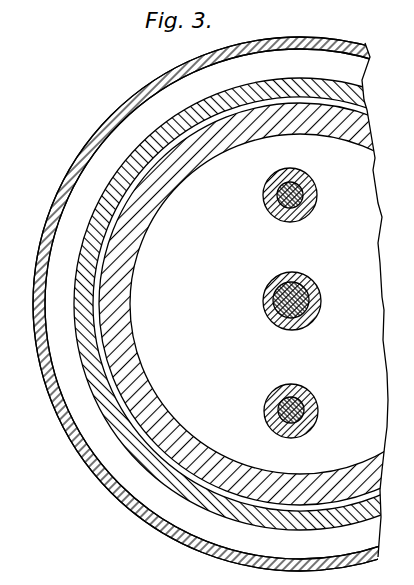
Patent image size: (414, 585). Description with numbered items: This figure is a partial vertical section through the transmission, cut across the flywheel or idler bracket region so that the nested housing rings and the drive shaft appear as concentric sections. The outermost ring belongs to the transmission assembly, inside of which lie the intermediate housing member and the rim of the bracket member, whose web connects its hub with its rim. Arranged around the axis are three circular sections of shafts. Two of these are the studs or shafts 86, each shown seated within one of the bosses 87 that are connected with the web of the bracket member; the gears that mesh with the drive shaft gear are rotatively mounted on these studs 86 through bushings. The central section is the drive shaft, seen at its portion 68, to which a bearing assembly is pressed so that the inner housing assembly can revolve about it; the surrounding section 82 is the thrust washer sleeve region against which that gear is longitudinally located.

The studs or shafts 86 is at (303, 188).
The bosses 87 is at (317, 197).
The outer sleeve 82 is at (313, 283).
The portion of the drive shaft 68 is at (308, 312).